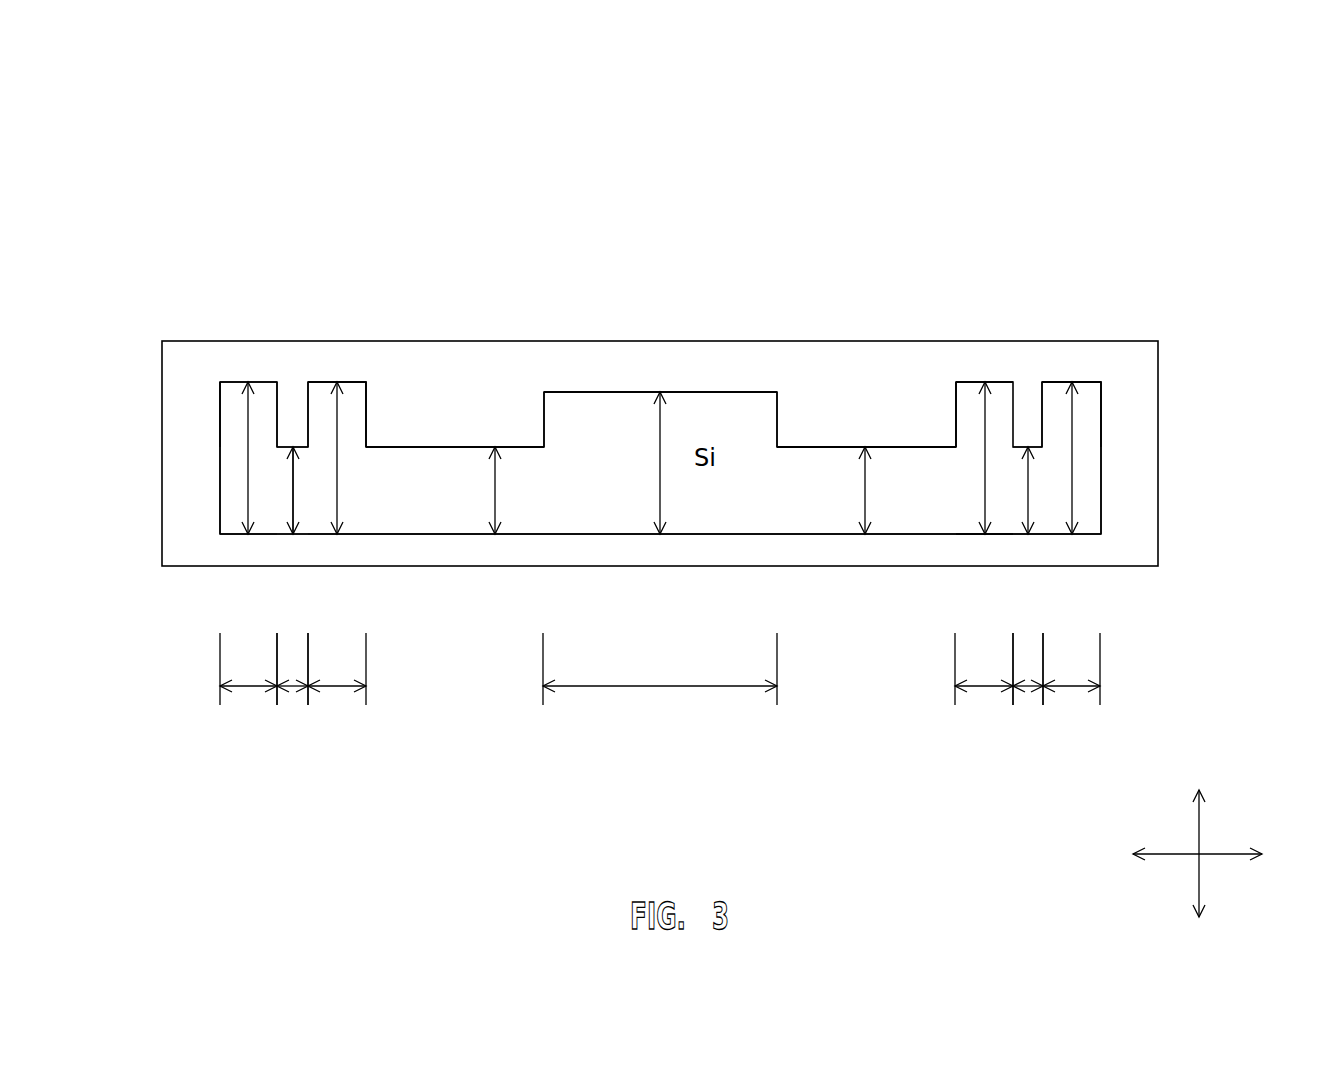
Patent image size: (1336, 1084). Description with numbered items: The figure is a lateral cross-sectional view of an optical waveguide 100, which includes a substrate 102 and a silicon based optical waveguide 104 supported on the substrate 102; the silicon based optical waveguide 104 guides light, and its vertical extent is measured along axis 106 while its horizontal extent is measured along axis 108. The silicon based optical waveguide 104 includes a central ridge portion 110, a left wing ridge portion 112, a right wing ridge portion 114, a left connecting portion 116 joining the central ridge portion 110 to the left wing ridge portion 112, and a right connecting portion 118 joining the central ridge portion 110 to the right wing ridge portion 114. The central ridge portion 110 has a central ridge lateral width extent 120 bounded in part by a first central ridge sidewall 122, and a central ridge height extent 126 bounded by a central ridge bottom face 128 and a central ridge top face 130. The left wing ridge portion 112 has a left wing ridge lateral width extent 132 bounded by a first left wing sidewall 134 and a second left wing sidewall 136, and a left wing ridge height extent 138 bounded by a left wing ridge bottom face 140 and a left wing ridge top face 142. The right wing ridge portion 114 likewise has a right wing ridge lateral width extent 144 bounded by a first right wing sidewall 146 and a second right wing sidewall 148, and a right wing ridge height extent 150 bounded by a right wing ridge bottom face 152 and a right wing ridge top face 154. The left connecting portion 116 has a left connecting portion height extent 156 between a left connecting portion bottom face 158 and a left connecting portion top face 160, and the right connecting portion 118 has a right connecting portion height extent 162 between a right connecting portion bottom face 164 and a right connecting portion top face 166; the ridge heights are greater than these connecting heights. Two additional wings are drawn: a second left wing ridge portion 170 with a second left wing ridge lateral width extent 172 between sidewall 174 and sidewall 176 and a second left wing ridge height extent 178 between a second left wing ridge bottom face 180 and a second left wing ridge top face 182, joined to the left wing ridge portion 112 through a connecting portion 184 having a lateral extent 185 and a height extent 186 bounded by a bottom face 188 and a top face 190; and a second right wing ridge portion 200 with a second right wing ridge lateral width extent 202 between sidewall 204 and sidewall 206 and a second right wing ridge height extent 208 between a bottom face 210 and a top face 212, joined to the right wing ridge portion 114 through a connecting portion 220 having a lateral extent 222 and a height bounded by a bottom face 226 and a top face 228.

The optical waveguide 100 is at (888, 160).
The substrate 102 is at (1133, 552).
The silicon based optical waveguide 104 is at (610, 408).
The axis 106 is at (1199, 827).
The axis 108 is at (1228, 858).
The central ridge portion 110 is at (725, 370).
The left wing ridge portion 112 is at (337, 457).
The right wing ridge portion 114 is at (988, 373).
The left connecting portion 116 is at (490, 393).
The right connecting portion 118 is at (828, 383).
The central ridge lateral width extent 120 is at (660, 687).
The first central ridge sidewall 122 is at (543, 403).
The central ridge height extent 126 is at (663, 420).
The central ridge bottom face 128 is at (780, 402).
The central ridge top face 130 is at (582, 392).
The left wing ridge lateral width extent 132 is at (335, 688).
The first left wing sidewall 134 is at (307, 398).
The second left wing sidewall 136 is at (367, 393).
The left wing ridge height extent 138 is at (348, 493).
The left wing ridge bottom face 140 is at (337, 537).
The left wing ridge top face 142 is at (352, 382).
The right wing ridge lateral width extent 144 is at (985, 688).
The first right wing sidewall 146 is at (1022, 445).
The second right wing sidewall 148 is at (956, 395).
The right wing ridge height extent 150 is at (957, 427).
The right wing ridge bottom face 152 is at (982, 538).
The right wing ridge top face 154 is at (980, 383).
The left connecting portion height extent 156 is at (497, 493).
The left connecting portion bottom face 158 is at (487, 538).
The left connecting portion top face 160 is at (452, 440).
The right connecting portion height extent 162 is at (865, 492).
The right connecting portion bottom face 164 is at (817, 538).
The right connecting portion top face 166 is at (848, 447).
The second left wing ridge portion 170 is at (242, 432).
The second left wing ridge lateral width extent 172 is at (250, 688).
The sidewall 174 is at (218, 393).
The sidewall 176 is at (291, 440).
The second left wing ridge height extent 178 is at (248, 460).
The second left wing ridge bottom face 180 is at (247, 537).
The second left wing ridge top face 182 is at (235, 380).
The connecting portion 184 is at (290, 475).
The lateral extent 185 is at (293, 688).
The height extent 186 is at (293, 507).
The bottom face 188 is at (292, 537).
The top face 190 is at (299, 440).
The second right wing ridge portion 200 is at (1100, 373).
The second right wing ridge lateral width extent 202 is at (1072, 688).
The sidewall 204 is at (1057, 382).
The sidewall 206 is at (1102, 413).
The second right wing ridge height extent 208 is at (1073, 462).
The second left wing ridge bottom face 210 is at (1075, 538).
The second left wing ridge top face 212 is at (1080, 380).
The connecting portion 220 is at (1005, 545).
The lateral extent 222 is at (1027, 688).
The bottom face 226 is at (1032, 538).
The top face 228 is at (1040, 440).